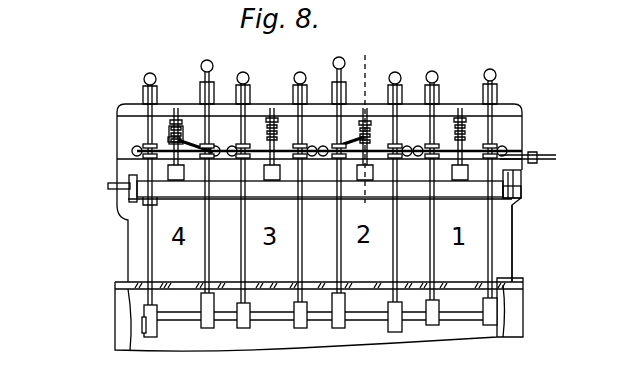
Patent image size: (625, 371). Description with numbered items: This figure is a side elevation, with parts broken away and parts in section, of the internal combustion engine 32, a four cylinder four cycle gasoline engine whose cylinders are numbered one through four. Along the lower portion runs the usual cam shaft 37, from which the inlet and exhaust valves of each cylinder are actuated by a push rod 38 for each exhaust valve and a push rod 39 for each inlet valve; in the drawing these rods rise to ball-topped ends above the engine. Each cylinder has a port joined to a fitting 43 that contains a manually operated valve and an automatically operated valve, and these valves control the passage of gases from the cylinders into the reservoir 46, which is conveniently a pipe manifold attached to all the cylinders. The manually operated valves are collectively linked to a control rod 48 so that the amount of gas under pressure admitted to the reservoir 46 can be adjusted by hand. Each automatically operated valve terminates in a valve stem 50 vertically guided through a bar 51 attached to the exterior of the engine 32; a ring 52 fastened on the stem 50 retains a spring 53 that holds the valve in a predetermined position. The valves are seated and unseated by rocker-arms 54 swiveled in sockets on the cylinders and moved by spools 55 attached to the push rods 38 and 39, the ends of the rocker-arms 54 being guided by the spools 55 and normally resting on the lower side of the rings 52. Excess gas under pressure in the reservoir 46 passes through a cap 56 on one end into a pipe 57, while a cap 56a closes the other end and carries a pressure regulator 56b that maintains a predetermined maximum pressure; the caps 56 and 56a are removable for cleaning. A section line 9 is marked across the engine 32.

The section line 9 is at (373, 208).
The internal combustion engine 32 is at (512, 238).
The cam shaft 37 is at (281, 318).
The push rod 38 is at (150, 73).
The push rod 39 is at (243, 72).
The fitting 43 is at (168, 169).
The reservoir 46 is at (147, 198).
The control rod 48 is at (555, 157).
The valve stem 50 is at (177, 106).
The bar 51 is at (172, 123).
The ring 52 is at (168, 139).
The spring 53 is at (170, 125).
The rocker-arm 54 is at (176, 164).
The spool 55 is at (143, 155).
The cap 56 is at (132, 199).
The cap 56a is at (522, 199).
The pressure regulator 56b is at (522, 175).
The pipe 57 is at (110, 188).